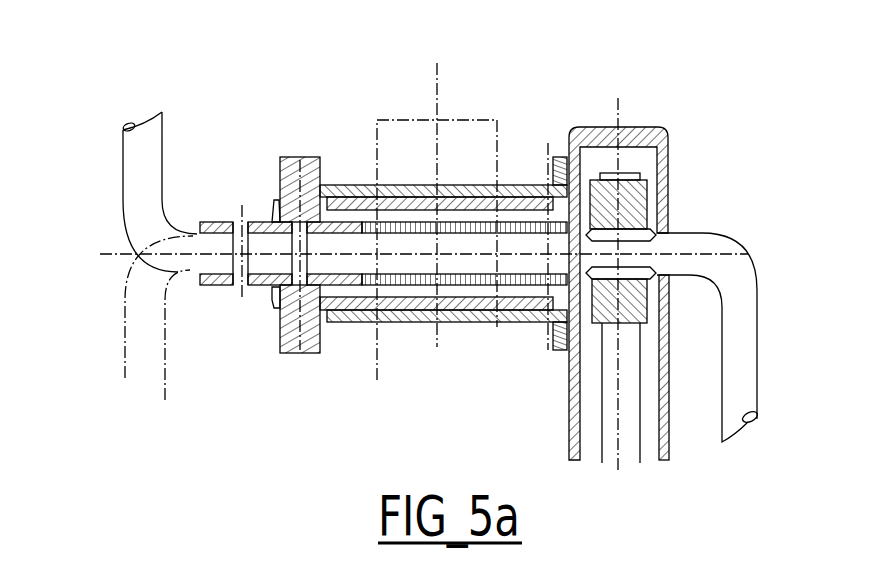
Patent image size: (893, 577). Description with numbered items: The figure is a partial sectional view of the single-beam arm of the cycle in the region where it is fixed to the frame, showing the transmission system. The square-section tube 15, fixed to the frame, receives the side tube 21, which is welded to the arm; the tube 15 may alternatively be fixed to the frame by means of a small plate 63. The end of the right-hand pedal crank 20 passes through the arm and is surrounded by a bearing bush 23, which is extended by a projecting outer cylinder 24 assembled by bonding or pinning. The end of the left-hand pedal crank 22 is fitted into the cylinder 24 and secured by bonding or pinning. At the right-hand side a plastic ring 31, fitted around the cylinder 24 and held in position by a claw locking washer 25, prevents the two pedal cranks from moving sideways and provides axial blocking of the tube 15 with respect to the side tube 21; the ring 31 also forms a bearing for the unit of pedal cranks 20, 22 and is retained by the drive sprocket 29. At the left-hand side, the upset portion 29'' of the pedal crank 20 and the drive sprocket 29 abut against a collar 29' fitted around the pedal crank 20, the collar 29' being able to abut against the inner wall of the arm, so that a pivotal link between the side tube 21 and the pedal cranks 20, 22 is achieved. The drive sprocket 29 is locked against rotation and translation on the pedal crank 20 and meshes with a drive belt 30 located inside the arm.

The square-section tube 15 is at (413, 318).
The right-hand pedal crank 20 is at (755, 328).
The side tube 21 is at (520, 200).
The left-hand pedal crank 22 is at (137, 178).
The bearing bush 23 is at (461, 286).
The outer cylinder 24 is at (233, 220).
The claw locking washer 25 is at (272, 305).
The drive sprocket 29 is at (685, 218).
The collar 29' is at (619, 248).
The upset portion 29'' is at (684, 232).
The drive belt 30 is at (640, 432).
The plastic ring 31 is at (288, 358).
The small plate 63 is at (395, 134).